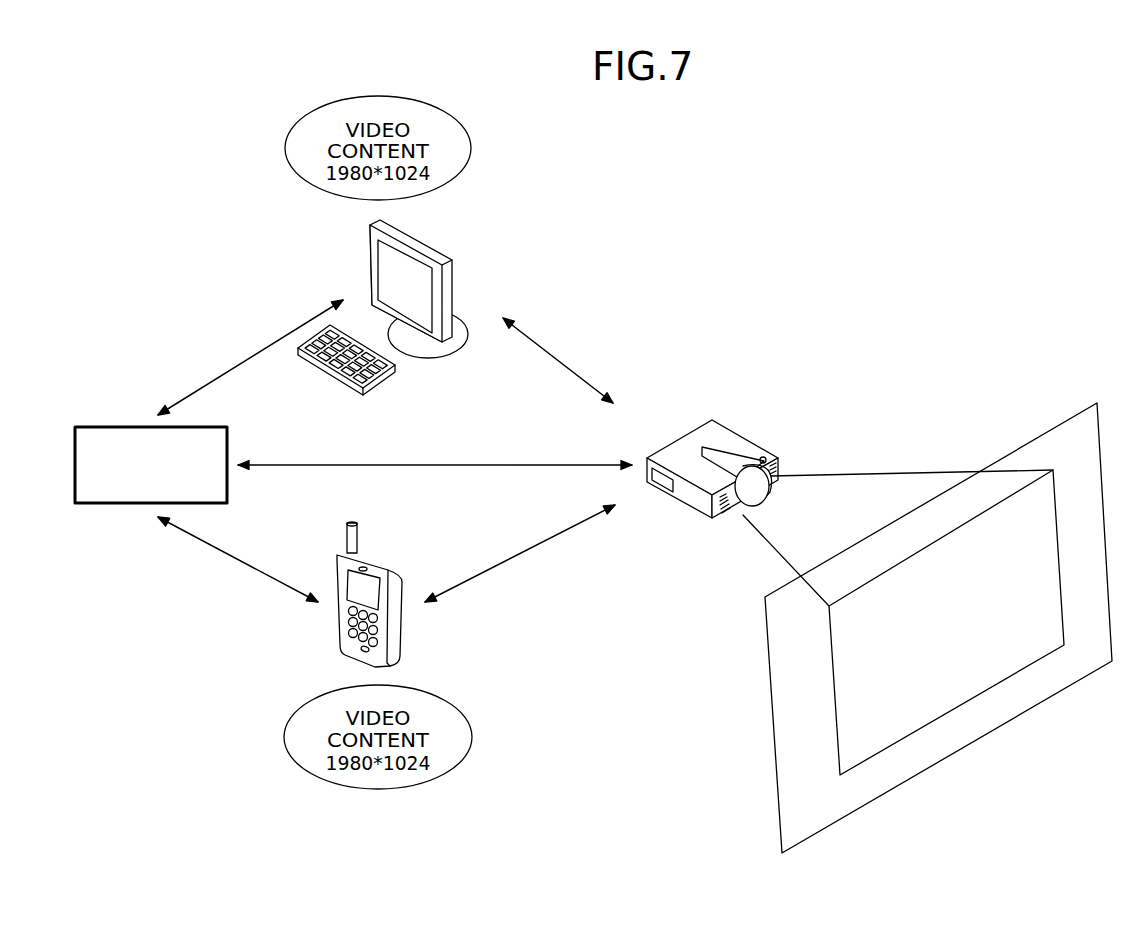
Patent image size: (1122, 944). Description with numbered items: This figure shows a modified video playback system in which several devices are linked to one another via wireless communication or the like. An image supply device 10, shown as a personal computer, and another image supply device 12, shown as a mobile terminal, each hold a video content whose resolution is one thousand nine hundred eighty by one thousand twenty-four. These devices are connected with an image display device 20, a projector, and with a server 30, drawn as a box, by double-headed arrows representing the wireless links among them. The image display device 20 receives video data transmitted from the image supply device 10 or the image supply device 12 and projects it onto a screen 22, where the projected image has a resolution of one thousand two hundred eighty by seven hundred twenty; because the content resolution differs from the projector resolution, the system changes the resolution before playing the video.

The image supply device 10 is at (444, 256).
The image supply device 12 is at (384, 556).
The image display device 20 is at (748, 436).
The screen 22 is at (1062, 418).
The server 30 is at (110, 427).